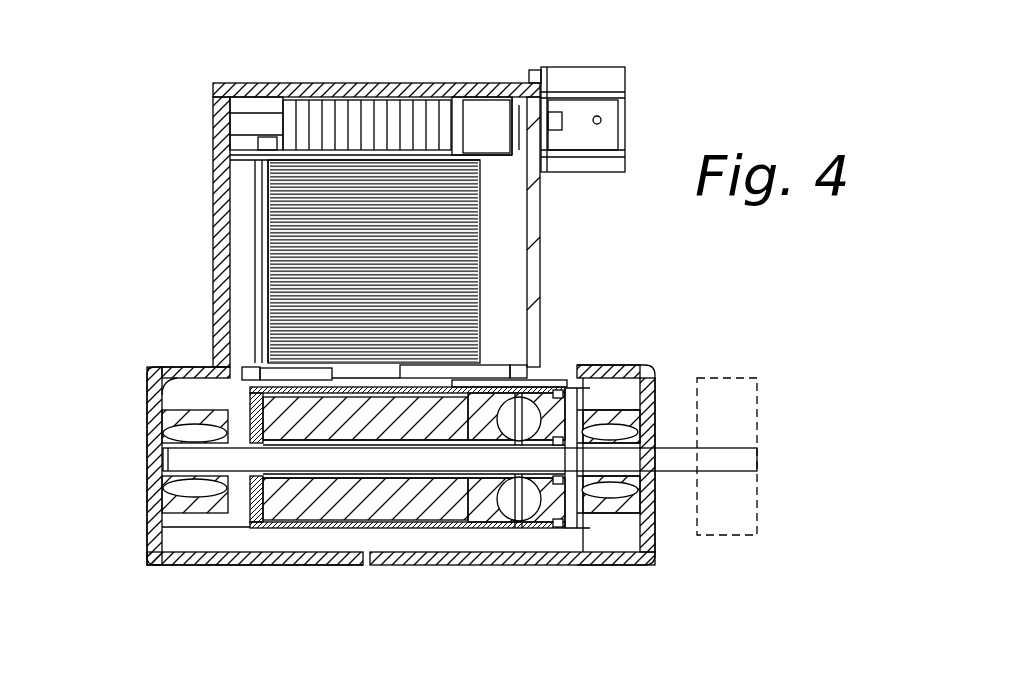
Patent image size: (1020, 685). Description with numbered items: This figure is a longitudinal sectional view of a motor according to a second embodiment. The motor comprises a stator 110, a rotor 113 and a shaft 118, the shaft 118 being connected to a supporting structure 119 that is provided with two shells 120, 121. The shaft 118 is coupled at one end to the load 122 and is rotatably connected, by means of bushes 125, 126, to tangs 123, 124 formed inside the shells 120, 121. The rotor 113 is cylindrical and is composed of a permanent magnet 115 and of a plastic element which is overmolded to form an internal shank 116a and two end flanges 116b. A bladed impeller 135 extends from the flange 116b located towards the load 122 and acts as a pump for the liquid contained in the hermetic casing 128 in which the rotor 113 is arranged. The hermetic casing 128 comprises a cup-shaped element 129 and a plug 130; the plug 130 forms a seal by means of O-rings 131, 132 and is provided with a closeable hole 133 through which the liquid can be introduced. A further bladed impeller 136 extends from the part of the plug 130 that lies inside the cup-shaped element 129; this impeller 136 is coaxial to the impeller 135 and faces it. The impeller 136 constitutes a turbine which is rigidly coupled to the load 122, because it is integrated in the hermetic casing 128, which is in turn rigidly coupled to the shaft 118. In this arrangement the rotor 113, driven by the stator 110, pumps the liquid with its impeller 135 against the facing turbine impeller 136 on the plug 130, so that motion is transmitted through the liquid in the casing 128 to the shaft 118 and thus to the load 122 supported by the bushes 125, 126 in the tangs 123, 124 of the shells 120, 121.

The stator 110 is at (488, 223).
The rotor 113 is at (481, 395).
The permanent magnet 115 is at (405, 510).
The internal shank 116a is at (322, 487).
The end flanges 116b is at (258, 520).
The shaft 118 is at (207, 462).
The supporting structure 119 is at (207, 125).
The shell 120 is at (216, 194).
The shell 121 is at (545, 243).
The load 122 is at (738, 408).
The tang 123 is at (178, 503).
The tang 124 is at (648, 547).
The bush 125 is at (197, 423).
The bush 126 is at (715, 402).
The hermetic casing 128 is at (554, 375).
The cup-shaped element 129 is at (292, 397).
The plug 130 is at (577, 410).
The O-ring 131 is at (578, 520).
The O-ring 132 is at (655, 472).
The closeable hole 133 is at (617, 528).
The bladed impeller 135 is at (520, 505).
The bladed impeller 136 is at (562, 518).